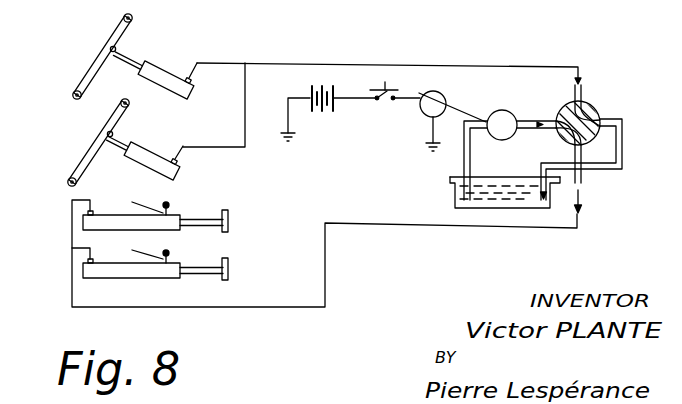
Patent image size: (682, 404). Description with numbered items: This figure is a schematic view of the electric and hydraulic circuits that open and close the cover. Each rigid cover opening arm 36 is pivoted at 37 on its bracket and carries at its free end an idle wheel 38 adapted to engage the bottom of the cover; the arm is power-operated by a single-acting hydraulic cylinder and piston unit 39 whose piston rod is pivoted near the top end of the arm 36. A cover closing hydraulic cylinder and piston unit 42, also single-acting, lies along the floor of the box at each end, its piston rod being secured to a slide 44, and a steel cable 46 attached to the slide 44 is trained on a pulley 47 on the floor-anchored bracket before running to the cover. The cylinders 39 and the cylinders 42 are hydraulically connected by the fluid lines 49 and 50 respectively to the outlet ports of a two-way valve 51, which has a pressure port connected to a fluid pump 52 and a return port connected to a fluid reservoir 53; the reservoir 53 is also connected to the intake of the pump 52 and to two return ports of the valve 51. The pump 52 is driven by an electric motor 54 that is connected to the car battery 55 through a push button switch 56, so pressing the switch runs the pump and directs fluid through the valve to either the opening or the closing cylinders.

The cover opening arm 36 is at (108, 52).
The pivot 37 is at (73, 93).
The idle wheel 38 is at (123, 17).
The hydraulic cylinder and piston unit 39 is at (150, 62).
The cover closing hydraulic cylinder and piston unit 42 is at (102, 214).
The slide 44 is at (250, 191).
The steel cable 46 is at (200, 212).
The pulley 47 is at (172, 198).
The fluid line 49 is at (280, 63).
The fluid line 50 is at (340, 222).
The two-way valve 51 is at (600, 112).
The fluid pump 52 is at (510, 92).
The fluid reservoir 53 is at (455, 185).
The electric motor 54 is at (420, 112).
The car battery 55 is at (333, 114).
The push button switch 56 is at (380, 108).